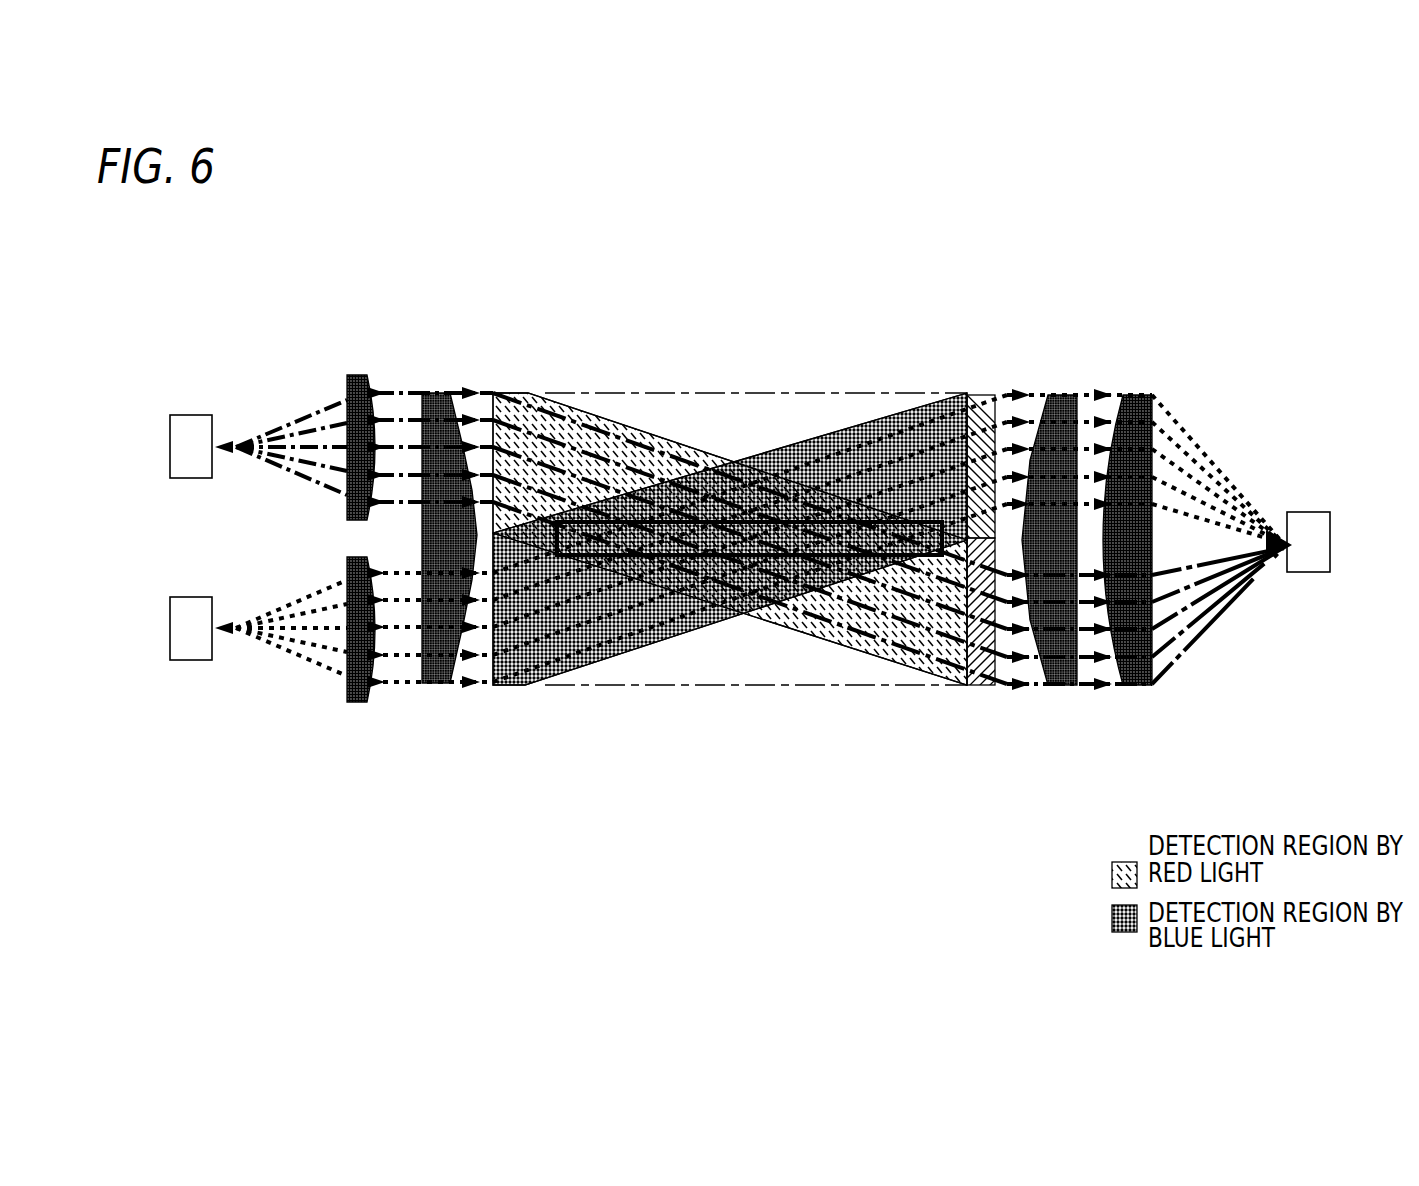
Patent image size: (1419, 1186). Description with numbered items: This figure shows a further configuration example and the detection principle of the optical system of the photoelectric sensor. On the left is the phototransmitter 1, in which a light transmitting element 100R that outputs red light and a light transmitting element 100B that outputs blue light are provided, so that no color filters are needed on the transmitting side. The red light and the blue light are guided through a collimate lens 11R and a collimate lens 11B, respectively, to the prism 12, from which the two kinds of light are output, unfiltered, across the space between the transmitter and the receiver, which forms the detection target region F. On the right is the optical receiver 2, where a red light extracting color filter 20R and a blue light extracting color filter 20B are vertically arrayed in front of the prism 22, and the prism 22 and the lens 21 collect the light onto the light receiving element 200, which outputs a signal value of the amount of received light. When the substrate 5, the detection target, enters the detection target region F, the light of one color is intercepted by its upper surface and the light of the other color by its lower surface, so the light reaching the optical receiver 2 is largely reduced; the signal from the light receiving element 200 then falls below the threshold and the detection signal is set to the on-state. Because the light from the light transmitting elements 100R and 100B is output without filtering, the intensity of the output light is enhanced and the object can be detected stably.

The phototransmitter 1 is at (309, 329).
The optical receiver 2 is at (1203, 318).
The substrate 5 is at (760, 556).
The collimate lens 11R is at (357, 375).
The collimate lens 11B is at (357, 703).
The prism 12 is at (437, 393).
The blue light extracting color filter 20B is at (995, 405).
The red light extracting color filter 20R is at (977, 688).
The lens 21 is at (1133, 400).
The prism 22 is at (1063, 398).
The light transmitting element 100R is at (192, 422).
The light transmitting element 100B is at (192, 653).
The light receiving element 200 is at (1305, 512).
The detection target region F is at (825, 393).